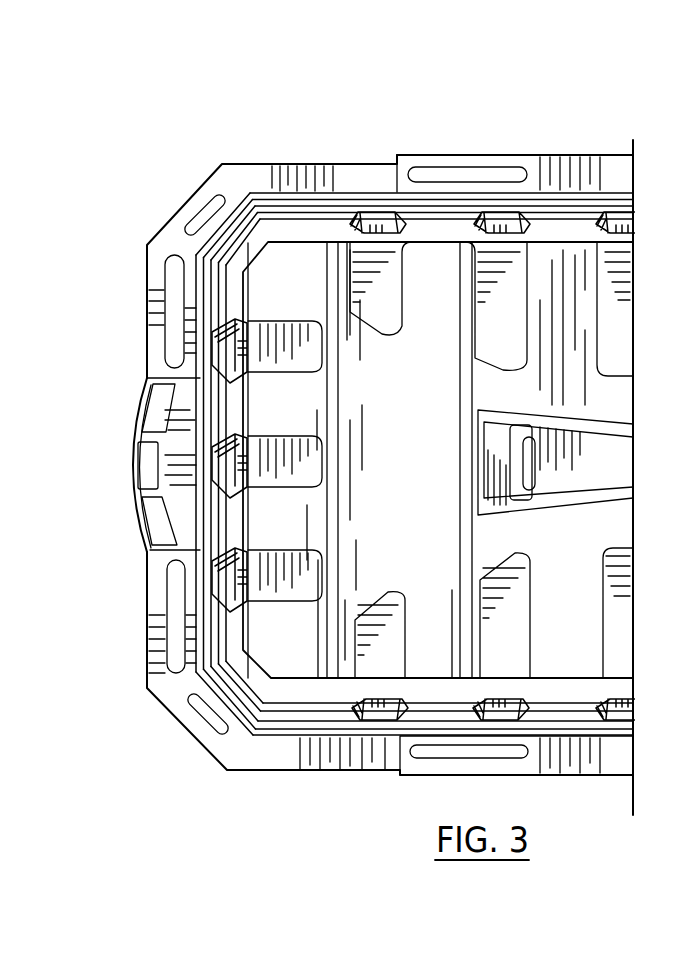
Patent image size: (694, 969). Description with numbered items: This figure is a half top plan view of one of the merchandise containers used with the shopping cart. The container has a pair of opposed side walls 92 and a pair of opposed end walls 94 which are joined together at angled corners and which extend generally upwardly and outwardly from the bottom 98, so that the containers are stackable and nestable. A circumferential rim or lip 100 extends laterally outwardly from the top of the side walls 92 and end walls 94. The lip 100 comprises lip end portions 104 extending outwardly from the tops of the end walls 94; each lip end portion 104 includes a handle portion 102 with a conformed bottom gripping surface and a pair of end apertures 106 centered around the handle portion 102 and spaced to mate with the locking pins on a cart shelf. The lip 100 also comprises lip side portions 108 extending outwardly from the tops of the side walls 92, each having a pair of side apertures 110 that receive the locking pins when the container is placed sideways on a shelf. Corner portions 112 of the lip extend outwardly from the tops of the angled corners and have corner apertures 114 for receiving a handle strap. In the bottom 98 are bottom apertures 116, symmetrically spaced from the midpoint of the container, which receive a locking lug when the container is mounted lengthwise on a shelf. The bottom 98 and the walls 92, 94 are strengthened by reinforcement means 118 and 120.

The side walls 92 is at (317, 212).
The end walls 94 is at (205, 282).
The bottom 98 is at (426, 487).
The circumferential rim or lip 100 is at (258, 150).
The handle portion 102 is at (133, 452).
The lip end portions 104 is at (145, 348).
The end apertures 106 is at (172, 310).
The lip side portions 108 is at (353, 165).
The side apertures 110 is at (441, 175).
The corner portions 112 is at (163, 232).
The corner apertures 114 is at (205, 215).
The bottom apertures 116 is at (531, 468).
The reinforcement means 118 is at (362, 235).
The reinforcement means 120 is at (380, 313).